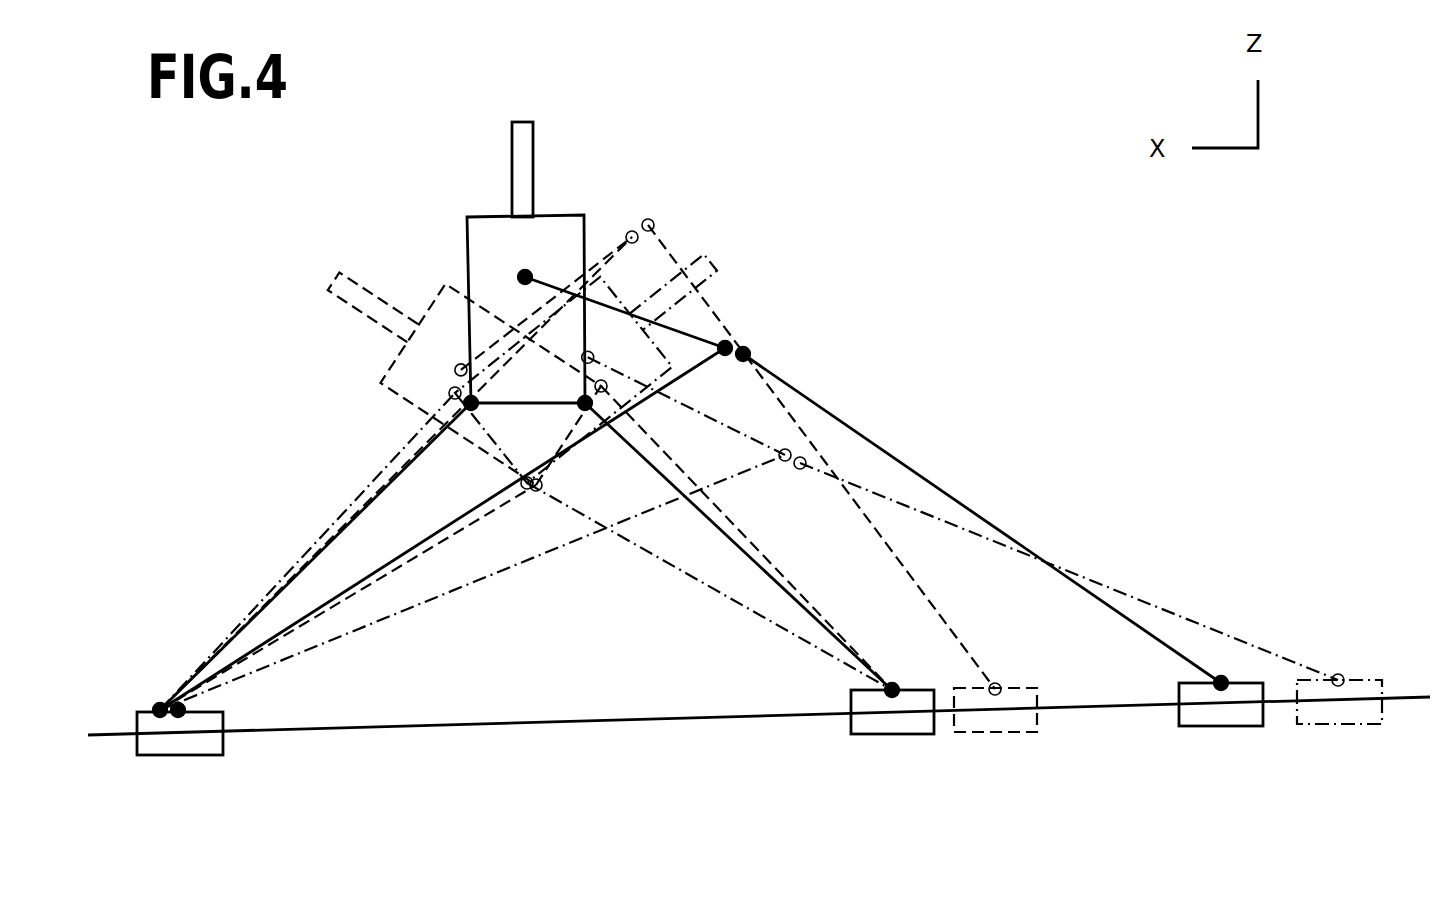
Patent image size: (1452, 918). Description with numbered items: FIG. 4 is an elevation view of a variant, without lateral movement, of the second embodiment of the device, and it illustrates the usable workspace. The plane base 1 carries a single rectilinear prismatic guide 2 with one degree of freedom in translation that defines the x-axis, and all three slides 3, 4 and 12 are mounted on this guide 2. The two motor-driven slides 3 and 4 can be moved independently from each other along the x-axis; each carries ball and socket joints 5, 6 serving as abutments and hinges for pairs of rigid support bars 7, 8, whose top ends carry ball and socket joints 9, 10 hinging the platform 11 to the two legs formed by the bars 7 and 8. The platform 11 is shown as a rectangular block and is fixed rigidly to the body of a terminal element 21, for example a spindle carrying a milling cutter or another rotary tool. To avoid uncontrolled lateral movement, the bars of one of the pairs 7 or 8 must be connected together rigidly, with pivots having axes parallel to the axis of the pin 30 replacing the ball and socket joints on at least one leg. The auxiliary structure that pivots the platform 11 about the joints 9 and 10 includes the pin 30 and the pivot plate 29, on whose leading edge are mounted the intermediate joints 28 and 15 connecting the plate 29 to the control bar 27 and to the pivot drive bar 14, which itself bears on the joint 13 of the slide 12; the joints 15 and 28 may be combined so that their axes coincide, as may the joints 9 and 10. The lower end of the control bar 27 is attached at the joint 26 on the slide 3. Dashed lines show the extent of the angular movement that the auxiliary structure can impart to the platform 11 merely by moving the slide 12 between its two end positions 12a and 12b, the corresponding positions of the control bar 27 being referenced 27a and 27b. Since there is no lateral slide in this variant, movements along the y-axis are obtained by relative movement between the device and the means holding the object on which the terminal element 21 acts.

The plane base 1 is at (622, 768).
The prismatic guide 2 is at (462, 731).
The motor-driven slide 3 is at (160, 748).
The motor-driven slide 4 is at (887, 726).
The ball and socket joint 5 is at (180, 712).
The ball and socket joint 6 is at (893, 688).
The pair of rigid support bars 7 is at (312, 567).
The pair of rigid support bars 8 is at (737, 545).
The ball and socket joint 9 is at (466, 406).
The ball and socket joint 10 is at (588, 410).
The platform 11 is at (477, 215).
The slide 12 is at (1215, 717).
The end position of the slide 12a is at (1345, 718).
The end position of the slide 12b is at (1008, 720).
The joint 13 is at (1222, 682).
The pivot drive bar 14 is at (927, 480).
The intermediate joint 15 is at (752, 357).
The terminal element 21 is at (535, 150).
The joint on first slide 26 is at (156, 706).
The control bar 27 is at (360, 587).
The position of the control bar 27a is at (463, 590).
The position of the control bar 27b is at (393, 477).
The intermediate joint 28 is at (737, 343).
The pivot plate 29 is at (737, 340).
The pin 30 is at (530, 277).